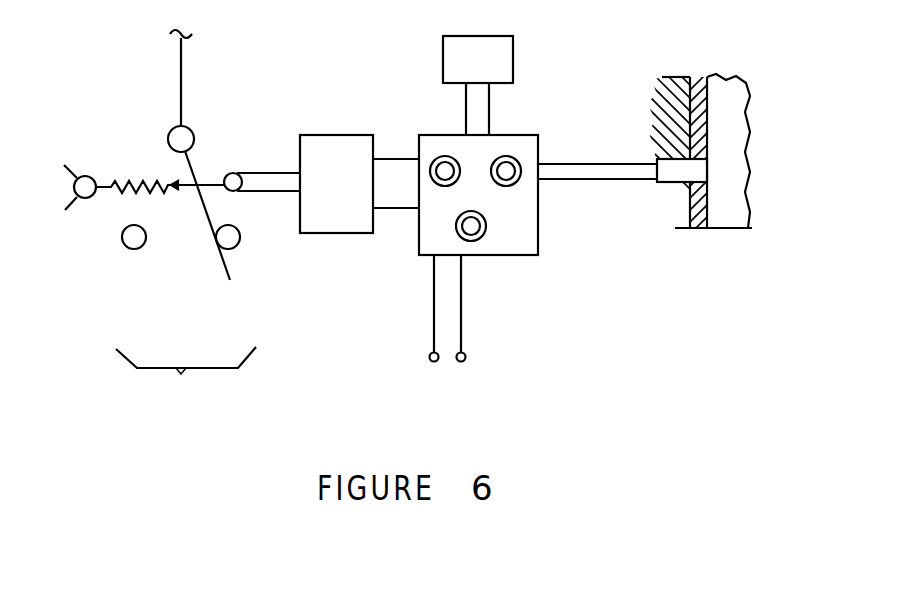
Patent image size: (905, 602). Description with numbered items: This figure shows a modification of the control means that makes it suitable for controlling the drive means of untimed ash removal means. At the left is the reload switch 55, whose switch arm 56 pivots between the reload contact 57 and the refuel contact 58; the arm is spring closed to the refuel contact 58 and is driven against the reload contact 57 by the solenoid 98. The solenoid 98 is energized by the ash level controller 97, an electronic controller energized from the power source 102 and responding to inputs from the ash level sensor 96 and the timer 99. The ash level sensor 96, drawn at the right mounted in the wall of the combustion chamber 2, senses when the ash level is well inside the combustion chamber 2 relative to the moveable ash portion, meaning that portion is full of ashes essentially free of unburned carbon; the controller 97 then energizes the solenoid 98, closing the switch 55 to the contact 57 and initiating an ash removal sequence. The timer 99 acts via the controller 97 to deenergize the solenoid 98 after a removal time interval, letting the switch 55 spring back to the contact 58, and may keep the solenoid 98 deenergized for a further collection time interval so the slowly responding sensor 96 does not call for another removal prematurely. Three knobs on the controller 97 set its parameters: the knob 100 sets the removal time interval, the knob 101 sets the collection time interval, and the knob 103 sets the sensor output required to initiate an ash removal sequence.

The combustion chamber 2 is at (723, 108).
The reload switch 55 is at (186, 377).
The switch arm 56 is at (188, 172).
The reload contact 57 is at (240, 242).
The refuel contact 58 is at (122, 242).
The ash level sensor 96 is at (682, 173).
The ash level controller 97 is at (417, 245).
The solenoid 98 is at (328, 133).
The timer 99 is at (470, 35).
The knob 100 is at (440, 153).
The knob 101 is at (507, 153).
The power source 102 is at (447, 358).
The knob 103 is at (480, 247).